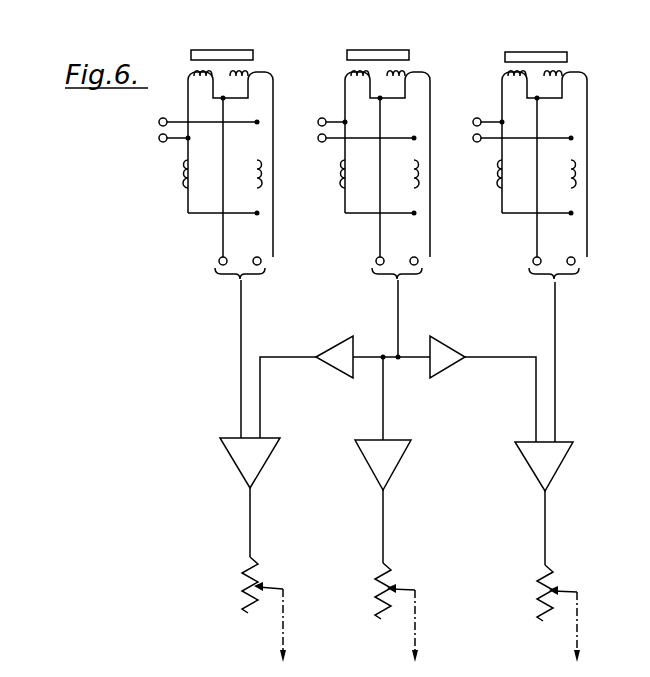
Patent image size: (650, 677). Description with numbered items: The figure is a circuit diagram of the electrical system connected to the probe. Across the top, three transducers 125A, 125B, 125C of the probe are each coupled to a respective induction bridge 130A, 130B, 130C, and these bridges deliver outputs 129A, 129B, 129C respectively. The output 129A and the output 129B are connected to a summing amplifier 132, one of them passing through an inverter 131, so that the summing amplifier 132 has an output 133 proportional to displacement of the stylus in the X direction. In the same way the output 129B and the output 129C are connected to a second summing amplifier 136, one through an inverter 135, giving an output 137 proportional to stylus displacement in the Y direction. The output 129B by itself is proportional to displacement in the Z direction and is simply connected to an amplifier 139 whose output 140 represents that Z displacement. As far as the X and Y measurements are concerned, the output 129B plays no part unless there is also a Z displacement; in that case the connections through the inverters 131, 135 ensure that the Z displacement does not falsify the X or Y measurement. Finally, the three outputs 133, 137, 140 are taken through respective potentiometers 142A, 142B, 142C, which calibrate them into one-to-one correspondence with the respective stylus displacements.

The transducer 125A is at (251, 46).
The transducer 125B is at (408, 46).
The transducer 125C is at (558, 46).
The induction bridge 130A is at (258, 110).
The induction bridge 130B is at (415, 110).
The induction bridge 130C is at (572, 114).
The output 129A is at (241, 330).
The output 129B is at (399, 301).
The output 129C is at (556, 303).
The inverter 131 is at (345, 341).
The inverter 135 is at (449, 367).
The summing amplifier 132 is at (266, 462).
The amplifier 139 is at (400, 462).
The summing amplifier 136 is at (562, 466).
The output 133 is at (250, 535).
The output 140 is at (383, 528).
The output 137 is at (545, 528).
The potentiometer 142A is at (284, 600).
The potentiometer 142B is at (417, 594).
The potentiometer 142C is at (579, 595).